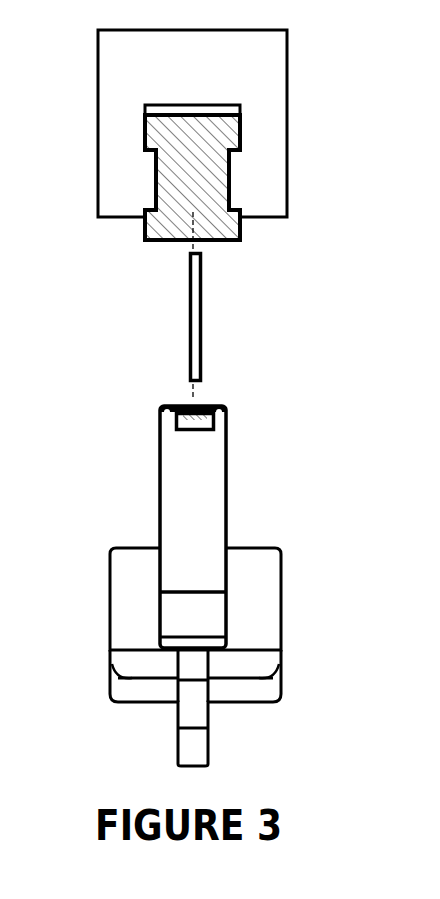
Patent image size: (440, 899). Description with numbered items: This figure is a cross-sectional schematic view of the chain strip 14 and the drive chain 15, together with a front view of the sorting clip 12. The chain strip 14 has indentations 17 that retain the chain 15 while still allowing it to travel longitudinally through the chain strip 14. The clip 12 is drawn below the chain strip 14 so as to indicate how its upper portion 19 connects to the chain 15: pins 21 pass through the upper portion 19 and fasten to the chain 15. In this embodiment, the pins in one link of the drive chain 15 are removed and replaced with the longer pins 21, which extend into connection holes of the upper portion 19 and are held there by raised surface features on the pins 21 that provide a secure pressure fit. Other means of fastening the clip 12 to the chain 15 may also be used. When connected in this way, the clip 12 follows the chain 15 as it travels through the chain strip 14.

The clip 12 is at (123, 606).
The chain strip 14 is at (258, 47).
The chain 15 is at (152, 128).
The indentations 17 is at (148, 181).
The upper portion 19 is at (218, 492).
The pins 21 is at (189, 336).